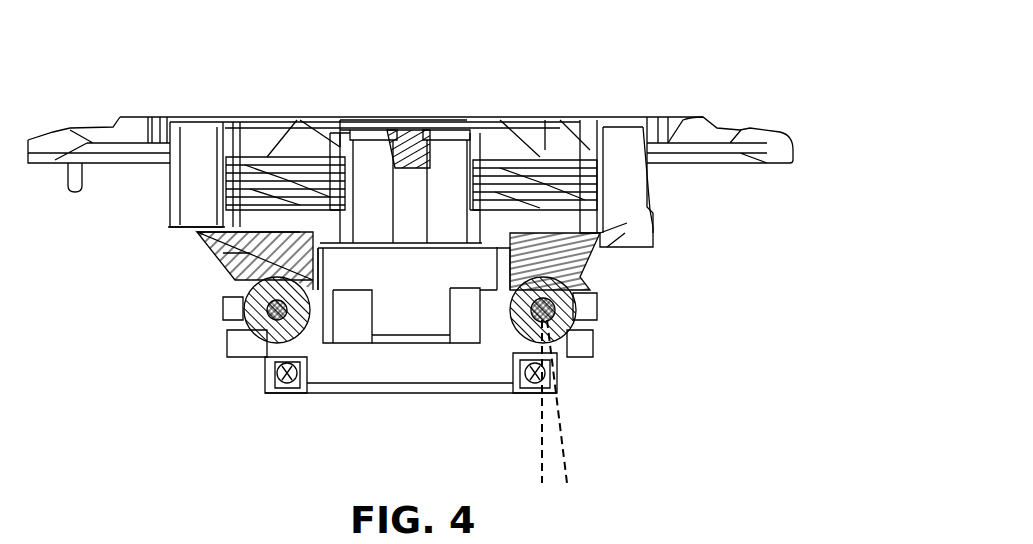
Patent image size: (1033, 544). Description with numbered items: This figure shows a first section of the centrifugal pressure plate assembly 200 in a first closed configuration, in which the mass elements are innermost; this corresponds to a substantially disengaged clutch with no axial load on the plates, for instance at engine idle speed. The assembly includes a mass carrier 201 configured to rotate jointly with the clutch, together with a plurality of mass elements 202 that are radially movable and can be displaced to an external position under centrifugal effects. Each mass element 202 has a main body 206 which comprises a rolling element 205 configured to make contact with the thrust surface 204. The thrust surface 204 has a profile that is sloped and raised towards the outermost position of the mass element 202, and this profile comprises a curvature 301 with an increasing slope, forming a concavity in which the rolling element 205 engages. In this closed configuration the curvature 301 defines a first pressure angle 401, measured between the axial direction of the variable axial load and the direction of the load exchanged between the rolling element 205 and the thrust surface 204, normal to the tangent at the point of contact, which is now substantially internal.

The centrifugal pressure plate assembly 200 is at (609, 60).
The mass carrier 201 is at (342, 237).
The mass element 202 is at (258, 229).
The thrust surface 204 is at (257, 348).
The rolling element 205 is at (257, 313).
The main body 206 is at (227, 252).
The curvature 301 is at (569, 342).
The first pressure angle 401 is at (567, 417).